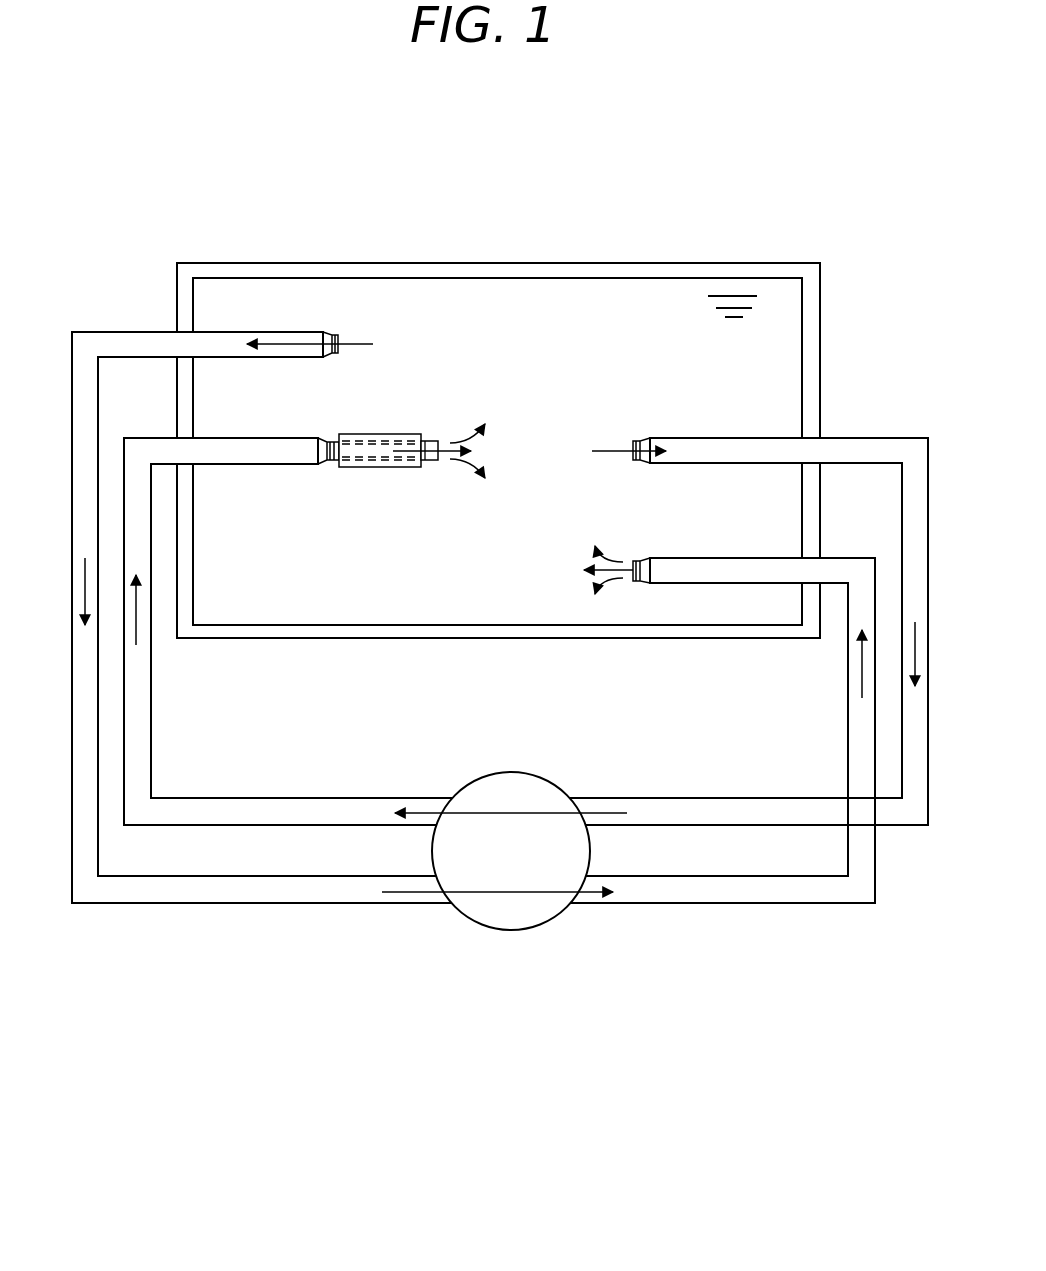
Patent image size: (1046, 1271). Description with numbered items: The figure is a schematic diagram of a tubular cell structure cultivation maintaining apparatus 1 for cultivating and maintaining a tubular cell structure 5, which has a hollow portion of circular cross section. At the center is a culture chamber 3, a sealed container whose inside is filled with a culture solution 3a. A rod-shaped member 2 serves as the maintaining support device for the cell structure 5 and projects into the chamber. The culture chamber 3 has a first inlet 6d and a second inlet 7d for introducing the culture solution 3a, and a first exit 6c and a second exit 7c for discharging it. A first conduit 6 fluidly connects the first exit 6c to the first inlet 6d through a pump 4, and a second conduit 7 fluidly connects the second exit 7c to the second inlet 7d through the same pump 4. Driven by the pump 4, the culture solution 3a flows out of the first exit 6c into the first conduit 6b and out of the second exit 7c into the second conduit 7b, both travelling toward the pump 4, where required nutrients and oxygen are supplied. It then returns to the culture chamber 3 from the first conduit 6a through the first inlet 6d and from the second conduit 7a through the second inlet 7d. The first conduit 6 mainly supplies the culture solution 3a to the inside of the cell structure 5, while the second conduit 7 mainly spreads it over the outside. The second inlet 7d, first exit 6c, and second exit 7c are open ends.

The tubular cell structure cultivation maintaining apparatus 1 is at (549, 222).
The rod-shaped member 2 is at (427, 460).
The culture chamber 3 is at (652, 262).
The culture solution 3a is at (780, 292).
The pump 4 is at (590, 858).
The tubular cell structure 5 is at (358, 467).
The first conduit 6 is at (622, 730).
The first conduit 6a is at (360, 797).
The first conduit 6b is at (683, 797).
The first exit 6c is at (650, 437).
The first inlet 6d is at (323, 440).
The second conduit 7 is at (355, 1022).
The second conduit 7a is at (597, 907).
The second conduit 7b is at (322, 903).
The second exit 7c is at (333, 333).
The second inlet 7d is at (650, 557).